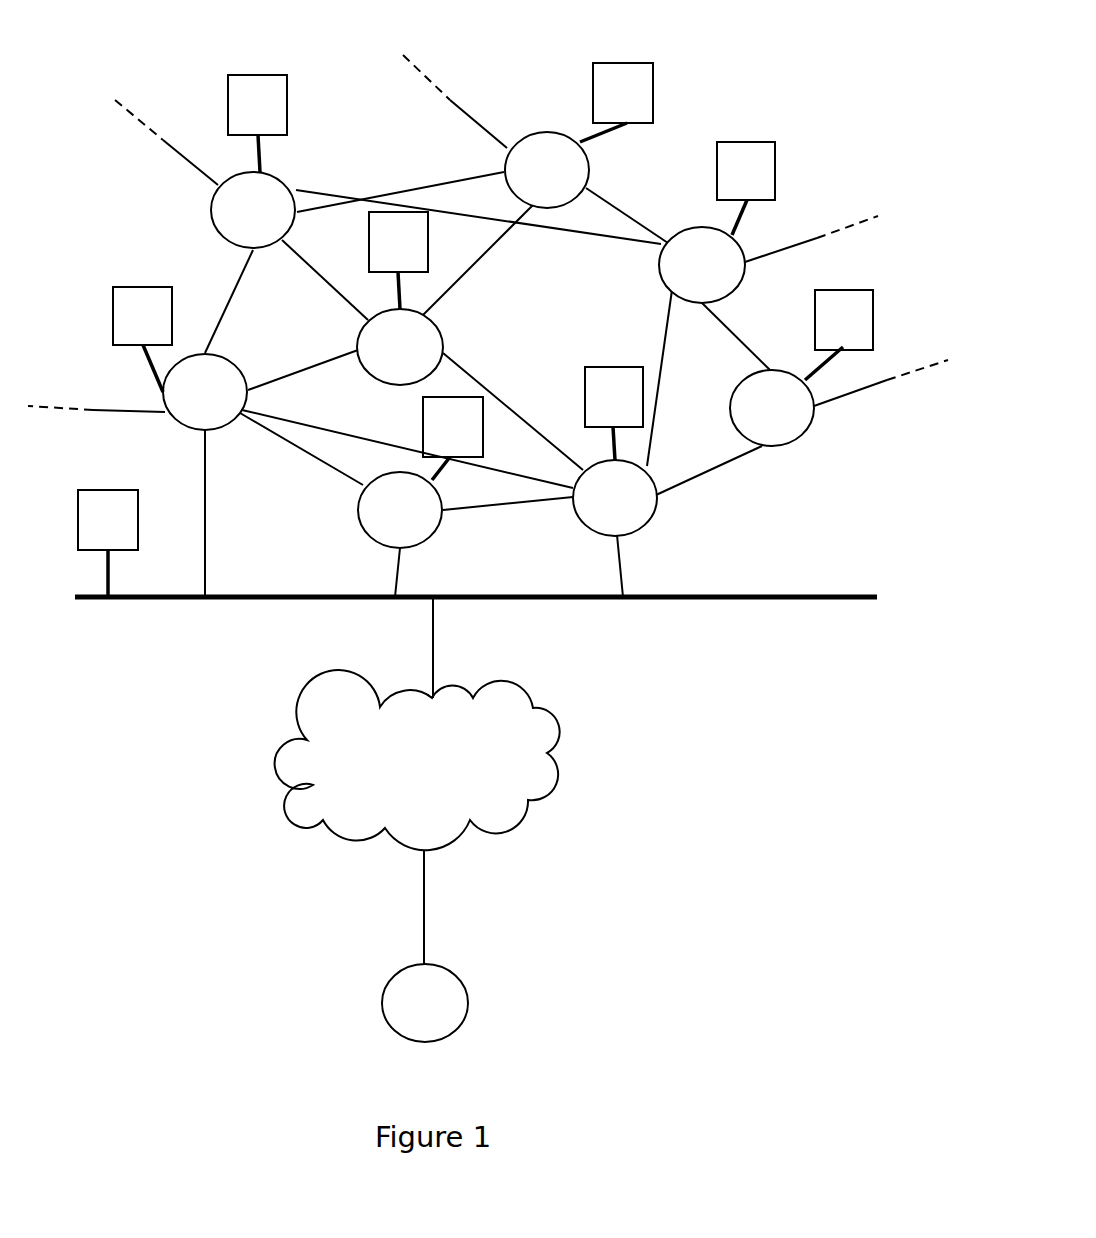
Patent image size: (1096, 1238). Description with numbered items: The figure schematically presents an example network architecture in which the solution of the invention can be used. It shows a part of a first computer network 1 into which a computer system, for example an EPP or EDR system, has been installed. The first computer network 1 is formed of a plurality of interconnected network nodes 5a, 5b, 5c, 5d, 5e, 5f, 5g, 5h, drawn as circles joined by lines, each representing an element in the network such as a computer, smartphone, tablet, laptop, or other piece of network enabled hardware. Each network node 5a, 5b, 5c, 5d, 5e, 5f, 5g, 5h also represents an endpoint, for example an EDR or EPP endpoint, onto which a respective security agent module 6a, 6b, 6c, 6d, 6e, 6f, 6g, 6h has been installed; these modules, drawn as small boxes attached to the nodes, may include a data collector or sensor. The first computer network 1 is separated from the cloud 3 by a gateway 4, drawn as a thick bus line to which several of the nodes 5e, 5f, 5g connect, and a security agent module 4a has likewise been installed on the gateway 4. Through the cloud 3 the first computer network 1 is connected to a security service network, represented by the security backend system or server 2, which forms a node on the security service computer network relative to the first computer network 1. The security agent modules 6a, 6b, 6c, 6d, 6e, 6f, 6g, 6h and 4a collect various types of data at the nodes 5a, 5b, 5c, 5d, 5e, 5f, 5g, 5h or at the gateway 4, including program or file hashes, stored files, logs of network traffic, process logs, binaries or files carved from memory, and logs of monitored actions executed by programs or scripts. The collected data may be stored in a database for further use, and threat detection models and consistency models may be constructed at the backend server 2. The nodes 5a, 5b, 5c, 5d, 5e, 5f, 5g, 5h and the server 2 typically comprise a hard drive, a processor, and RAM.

The first computer network 1 is at (711, 57).
The security backend system or server 2 is at (425, 946).
The cloud 3 is at (417, 723).
The gateway 4 is at (803, 597).
The security agent module 4a is at (108, 543).
The network node 5a is at (253, 210).
The network node 5b is at (547, 170).
The network node 5c is at (702, 265).
The network node 5d is at (772, 408).
The network node 5e is at (615, 498).
The network node 5f is at (400, 510).
The network node 5g is at (205, 392).
The network node 5h is at (400, 347).
The security agent module 6a is at (257, 123).
The security agent module 6b is at (616, 102).
The security agent module 6c is at (746, 188).
The security agent module 6d is at (839, 335).
The security agent module 6e is at (614, 413).
The security agent module 6f is at (453, 438).
The security agent module 6g is at (142, 339).
The security agent module 6h is at (398, 260).